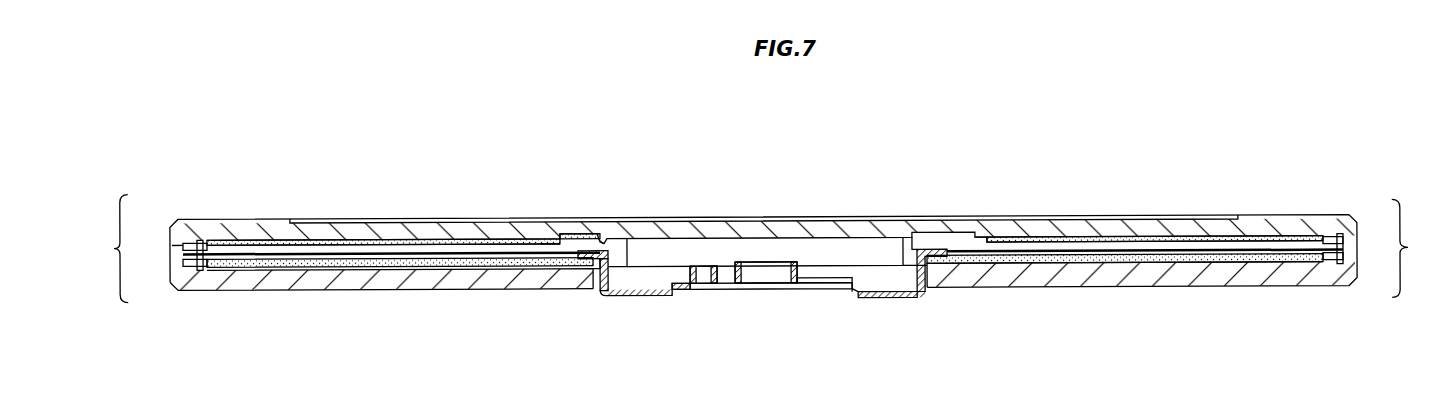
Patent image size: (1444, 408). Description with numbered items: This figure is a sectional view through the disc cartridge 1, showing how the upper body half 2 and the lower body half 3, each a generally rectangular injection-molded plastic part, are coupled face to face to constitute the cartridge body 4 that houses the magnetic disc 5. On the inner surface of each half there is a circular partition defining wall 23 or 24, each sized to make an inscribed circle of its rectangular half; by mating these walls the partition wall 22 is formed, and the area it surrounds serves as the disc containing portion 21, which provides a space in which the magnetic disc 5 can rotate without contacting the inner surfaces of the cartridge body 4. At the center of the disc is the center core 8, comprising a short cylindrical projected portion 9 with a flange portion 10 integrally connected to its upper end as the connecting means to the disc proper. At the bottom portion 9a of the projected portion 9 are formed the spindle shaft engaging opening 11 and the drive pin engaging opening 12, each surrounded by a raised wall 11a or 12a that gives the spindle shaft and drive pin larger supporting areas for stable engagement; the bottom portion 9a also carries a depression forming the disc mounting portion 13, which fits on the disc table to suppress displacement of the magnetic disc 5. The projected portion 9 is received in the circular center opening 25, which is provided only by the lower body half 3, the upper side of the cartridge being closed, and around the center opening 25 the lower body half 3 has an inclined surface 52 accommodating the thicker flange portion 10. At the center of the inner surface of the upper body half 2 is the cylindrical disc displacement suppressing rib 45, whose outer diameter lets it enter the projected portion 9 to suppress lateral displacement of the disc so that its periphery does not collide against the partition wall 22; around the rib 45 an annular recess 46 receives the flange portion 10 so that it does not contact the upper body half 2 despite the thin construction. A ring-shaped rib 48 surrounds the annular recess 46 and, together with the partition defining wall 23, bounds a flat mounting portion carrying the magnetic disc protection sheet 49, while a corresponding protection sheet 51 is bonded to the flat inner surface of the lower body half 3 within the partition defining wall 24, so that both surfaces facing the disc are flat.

The disc cartridge 1 is at (1285, 203).
The upper body half 2 is at (1347, 230).
The lower body half 3 is at (1347, 272).
The cartridge body 4 is at (1414, 263).
The magnetic disc 5 is at (978, 238).
The center core 8 is at (641, 296).
The projected portion 9 is at (616, 296).
The bottom portion 9a is at (668, 290).
The flange portion 10 is at (922, 250).
The spindle shaft engaging opening 11 is at (780, 288).
The raised wall 11a is at (778, 262).
The drive pin engaging opening 12 is at (714, 288).
The raised wall 12a is at (708, 270).
The disc mounting portion 13 is at (846, 296).
The disc containing portion 21 is at (333, 250).
The partition wall 22 is at (99, 249).
The partition defining wall 23 is at (186, 252).
The partition defining wall 24 is at (188, 259).
The center opening 25 is at (600, 293).
The disc displacement suppressing rib 45 is at (660, 252).
The annular recess 46 is at (616, 245).
The ring-shaped rib 48 is at (572, 235).
The magnetic disc protection sheet 49 is at (238, 240).
The magnetic disc protection sheet 51 is at (302, 262).
The inclined surface 52 is at (592, 285).